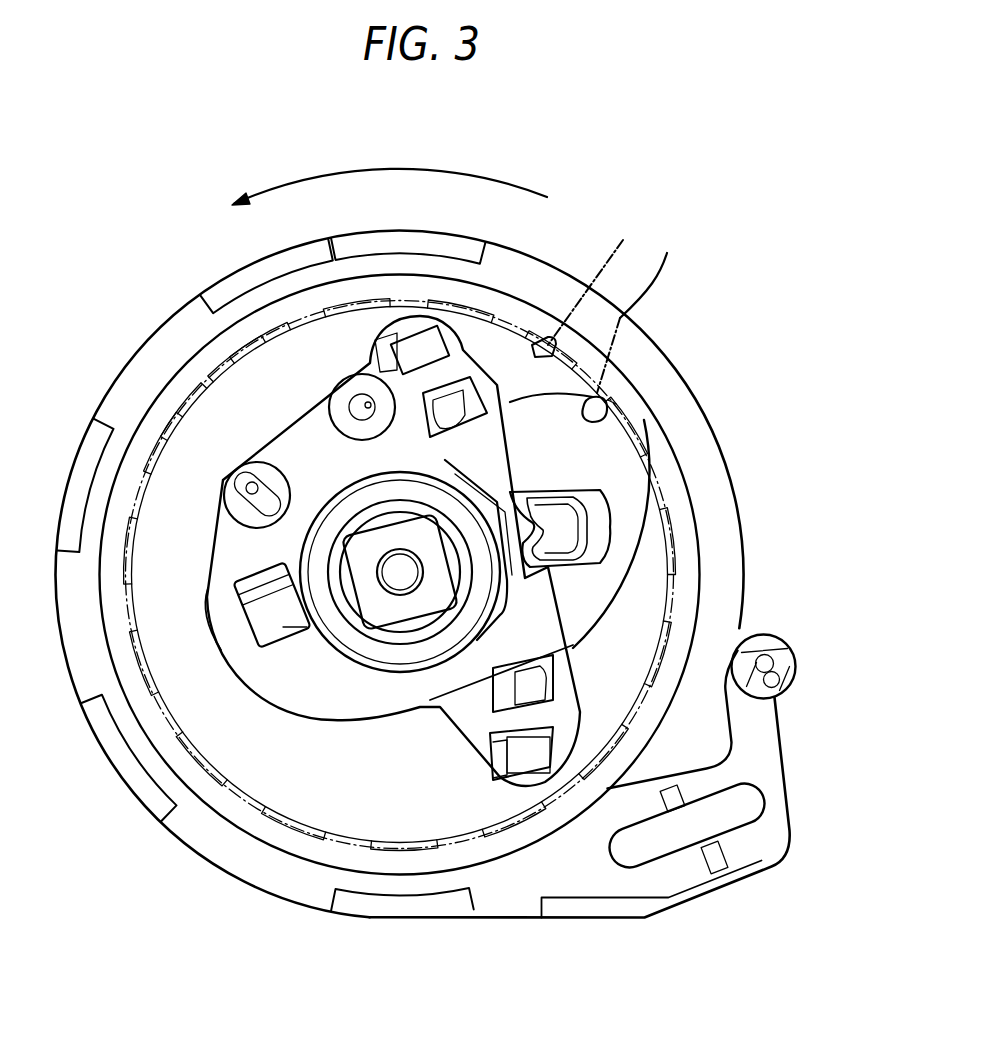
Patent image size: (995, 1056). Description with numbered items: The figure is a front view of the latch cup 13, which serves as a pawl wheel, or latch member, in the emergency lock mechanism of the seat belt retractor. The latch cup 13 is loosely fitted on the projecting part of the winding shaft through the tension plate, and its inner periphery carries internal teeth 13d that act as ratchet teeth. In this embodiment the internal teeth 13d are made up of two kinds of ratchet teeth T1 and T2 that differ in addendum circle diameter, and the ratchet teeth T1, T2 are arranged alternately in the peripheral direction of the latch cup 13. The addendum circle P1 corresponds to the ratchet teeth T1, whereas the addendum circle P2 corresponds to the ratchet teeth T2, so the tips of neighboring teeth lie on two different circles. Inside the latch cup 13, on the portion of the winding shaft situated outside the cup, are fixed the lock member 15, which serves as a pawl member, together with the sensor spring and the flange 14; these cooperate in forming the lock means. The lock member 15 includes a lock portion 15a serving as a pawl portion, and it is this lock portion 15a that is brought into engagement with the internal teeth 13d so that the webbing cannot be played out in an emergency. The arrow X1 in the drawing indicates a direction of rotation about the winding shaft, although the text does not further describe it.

The latch cup 13 is at (721, 558).
The internal teeth 13d is at (638, 484).
The flange 14 is at (460, 745).
The lock member 15 is at (590, 438).
The lock portion 15a is at (610, 415).
The addendum circle P1 is at (593, 278).
The addendum circle P2 is at (645, 314).
The ratchet teeth T1 is at (533, 352).
The ratchet teeth T2 is at (608, 400).
The rotation direction X1 is at (389, 171).